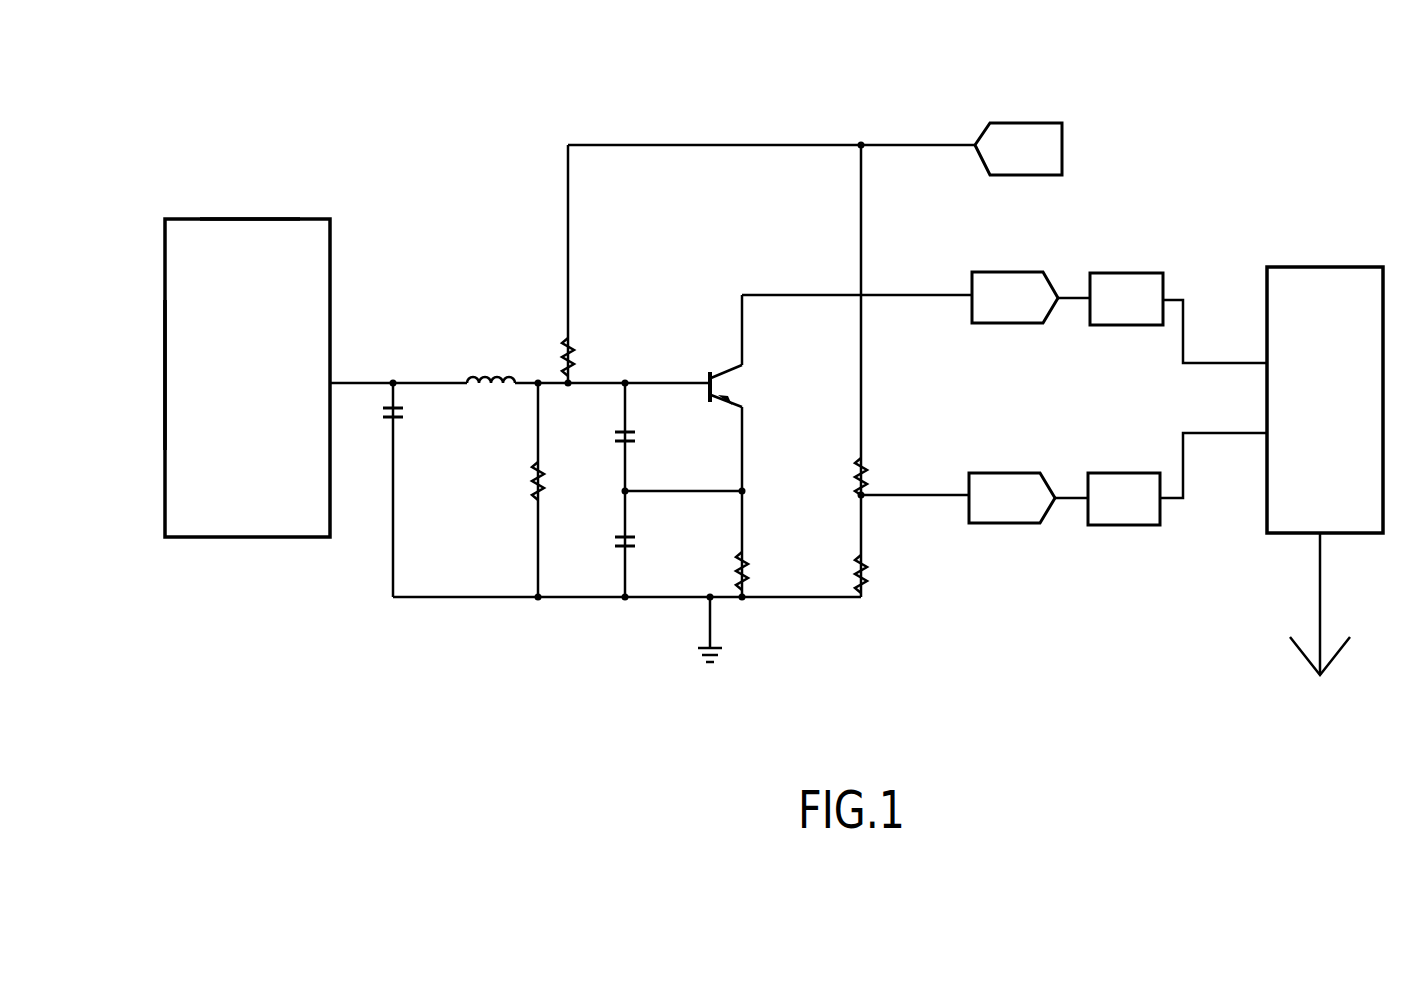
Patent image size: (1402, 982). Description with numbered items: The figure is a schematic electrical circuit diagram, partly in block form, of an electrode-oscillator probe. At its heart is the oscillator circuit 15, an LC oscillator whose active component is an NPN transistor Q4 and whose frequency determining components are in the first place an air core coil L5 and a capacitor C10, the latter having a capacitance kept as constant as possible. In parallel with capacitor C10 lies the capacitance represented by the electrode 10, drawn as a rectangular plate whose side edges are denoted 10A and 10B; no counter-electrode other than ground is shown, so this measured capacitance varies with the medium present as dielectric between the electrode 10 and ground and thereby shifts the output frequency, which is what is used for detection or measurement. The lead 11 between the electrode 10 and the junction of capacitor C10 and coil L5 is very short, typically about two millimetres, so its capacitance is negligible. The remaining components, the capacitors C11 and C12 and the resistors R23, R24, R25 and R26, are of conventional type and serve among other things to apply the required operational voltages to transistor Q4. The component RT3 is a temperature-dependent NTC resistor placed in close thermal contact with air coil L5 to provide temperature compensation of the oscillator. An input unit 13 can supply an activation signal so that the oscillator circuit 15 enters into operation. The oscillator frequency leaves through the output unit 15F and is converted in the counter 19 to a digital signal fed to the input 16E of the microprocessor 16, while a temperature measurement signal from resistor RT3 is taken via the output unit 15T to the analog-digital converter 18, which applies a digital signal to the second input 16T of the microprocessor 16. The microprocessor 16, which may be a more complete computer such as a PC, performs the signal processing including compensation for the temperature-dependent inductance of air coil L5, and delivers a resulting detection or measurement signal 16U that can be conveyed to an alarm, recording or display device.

The electrode 10 is at (225, 515).
The side edge of the electrode 10A is at (252, 219).
The side edge of the electrode 10B is at (165, 378).
The lead 11 is at (333, 380).
The input unit 13 is at (1025, 122).
The oscillator circuit 15 is at (665, 448).
The output unit for the oscillator frequency 15F is at (992, 272).
The output unit 15T is at (985, 525).
The microprocessor 16 is at (1300, 267).
The input of the microprocessor 16E is at (1208, 362).
The second input 16T is at (1208, 435).
The detection or measurement signal 16U is at (1318, 620).
The analog-digital converter 18 is at (1122, 525).
The counter 19 is at (1123, 273).
The coil L5 is at (491, 362).
The capacitor C10 is at (422, 415).
The capacitor C11 is at (656, 437).
The capacitor C12 is at (656, 542).
The resistor R23 is at (597, 357).
The resistor R24 is at (889, 476).
The resistor R25 is at (567, 481).
The resistor R26 is at (774, 569).
The temperature-dependent resistor RT3 is at (888, 574).
The NPN transistor Q4 is at (746, 386).